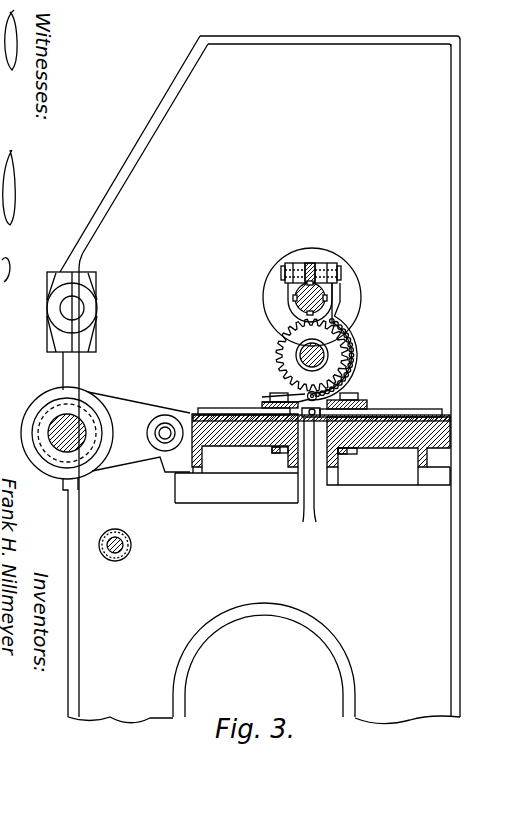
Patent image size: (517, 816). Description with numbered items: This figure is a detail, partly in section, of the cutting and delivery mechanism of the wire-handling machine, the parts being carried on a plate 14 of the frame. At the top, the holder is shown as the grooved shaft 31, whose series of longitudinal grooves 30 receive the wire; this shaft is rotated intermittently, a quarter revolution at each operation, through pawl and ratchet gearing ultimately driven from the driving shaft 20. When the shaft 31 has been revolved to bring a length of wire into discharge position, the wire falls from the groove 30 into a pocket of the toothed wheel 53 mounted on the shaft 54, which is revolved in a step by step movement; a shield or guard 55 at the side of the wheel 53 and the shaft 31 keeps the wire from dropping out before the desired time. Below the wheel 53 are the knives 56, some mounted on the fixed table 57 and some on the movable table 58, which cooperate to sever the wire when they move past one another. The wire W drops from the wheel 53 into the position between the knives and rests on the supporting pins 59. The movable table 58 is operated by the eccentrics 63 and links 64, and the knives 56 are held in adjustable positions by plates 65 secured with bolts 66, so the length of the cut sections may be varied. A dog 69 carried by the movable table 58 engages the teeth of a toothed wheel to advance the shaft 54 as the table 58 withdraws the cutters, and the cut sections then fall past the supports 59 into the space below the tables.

The supporting plate 14 is at (462, 238).
The driving shaft 20 is at (57, 420).
The grooves 30 is at (325, 300).
The shaft 31 is at (293, 293).
The toothed wheel 53 is at (347, 340).
The shaft 54 is at (300, 350).
The shield or guard 55 is at (350, 367).
The knives 56 is at (212, 413).
The fixed table 57 is at (392, 430).
The movable table 58 is at (235, 433).
The pins or supporting members 59 is at (310, 417).
The eccentrics 63 is at (77, 480).
The links 64 is at (120, 413).
The plates 65 is at (262, 403).
The bolts 66 is at (280, 453).
The dog 69 is at (320, 395).
The wire W is at (314, 479).